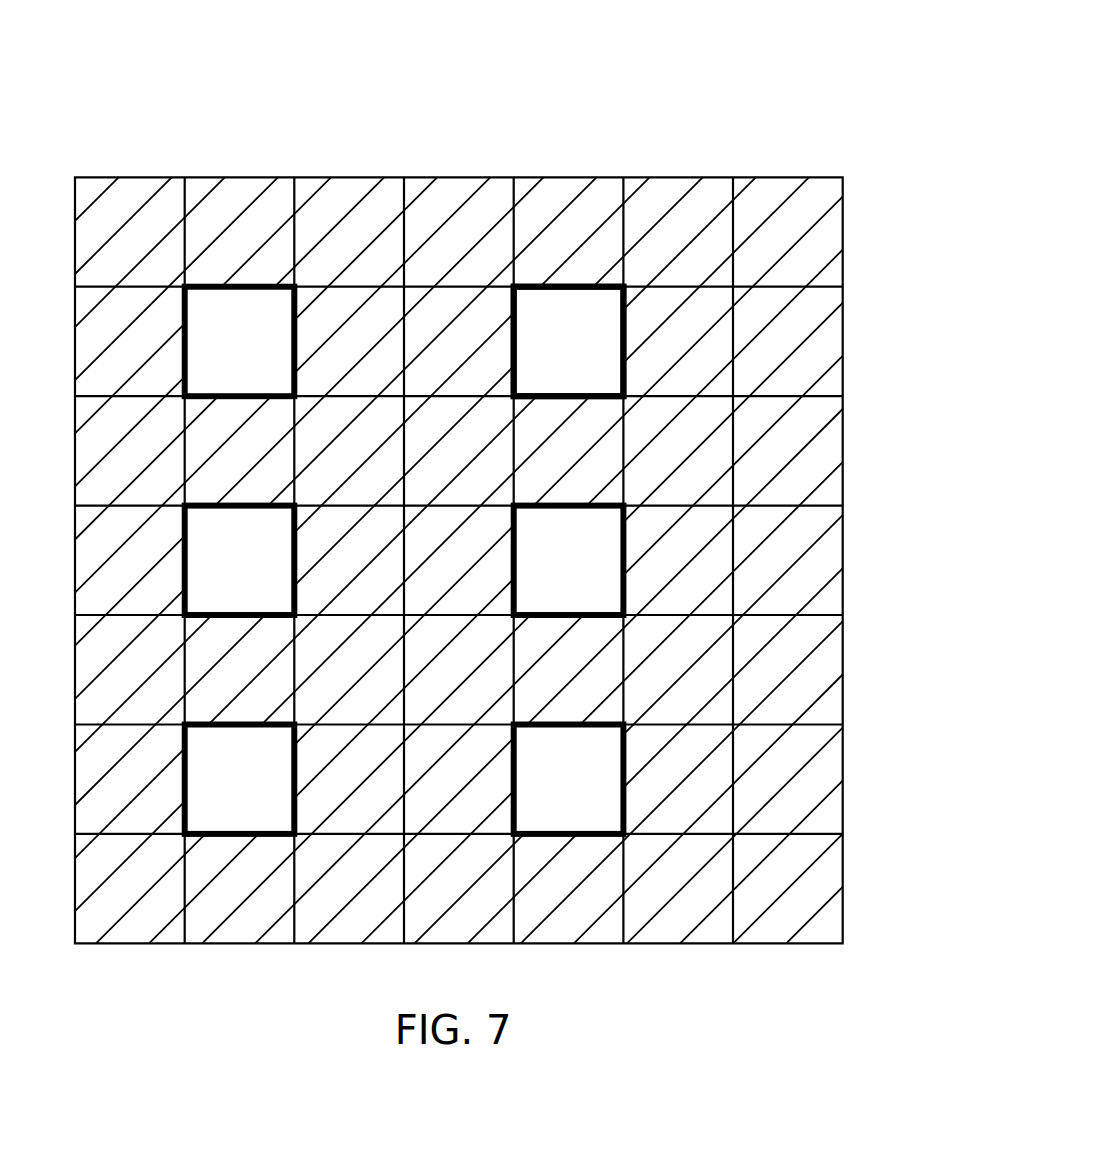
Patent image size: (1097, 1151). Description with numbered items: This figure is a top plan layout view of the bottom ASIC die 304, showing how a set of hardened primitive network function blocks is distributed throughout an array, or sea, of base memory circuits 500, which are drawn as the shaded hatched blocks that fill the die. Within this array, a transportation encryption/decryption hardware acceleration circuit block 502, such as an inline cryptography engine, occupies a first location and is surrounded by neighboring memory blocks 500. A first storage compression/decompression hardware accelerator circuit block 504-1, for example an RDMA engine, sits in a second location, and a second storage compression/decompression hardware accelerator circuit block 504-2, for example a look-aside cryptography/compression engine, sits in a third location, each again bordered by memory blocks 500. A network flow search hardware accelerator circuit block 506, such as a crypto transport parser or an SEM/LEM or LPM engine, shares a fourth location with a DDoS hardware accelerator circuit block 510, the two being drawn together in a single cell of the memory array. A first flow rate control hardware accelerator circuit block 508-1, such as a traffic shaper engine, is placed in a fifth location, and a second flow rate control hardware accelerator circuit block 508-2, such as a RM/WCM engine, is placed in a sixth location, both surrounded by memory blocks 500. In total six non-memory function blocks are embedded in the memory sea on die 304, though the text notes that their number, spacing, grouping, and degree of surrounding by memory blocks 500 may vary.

The base ASIC die 304 is at (798, 67).
The base memory circuits 500 is at (345, 192).
The transportation encryption/decryption hardware accelerator circuit block 502 is at (216, 352).
The first storage compression/decompression hardware accelerator circuit block 504-1 is at (204, 572).
The second storage compression/decompression hardware accelerator circuit block 504-2 is at (204, 790).
The network flow search hardware accelerator circuit block 506 is at (592, 328).
The first flow rate control hardware accelerator circuit block 508-1 is at (604, 572).
The second flow rate control hardware accelerator circuit block 508-2 is at (604, 790).
The DDoS hardware accelerator circuit block 510 is at (592, 378).